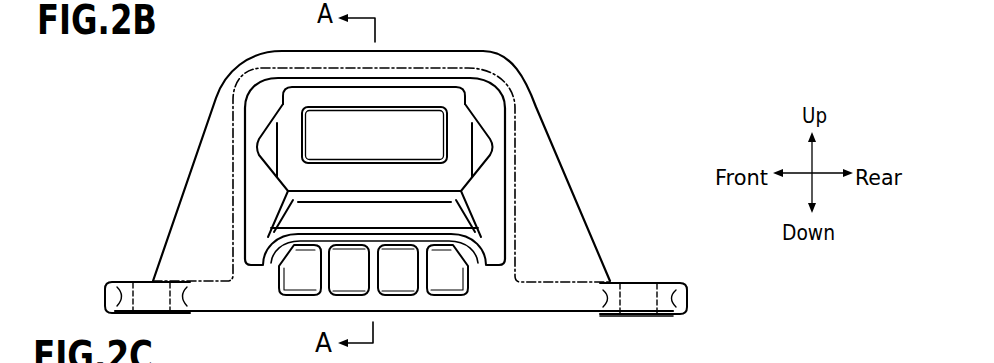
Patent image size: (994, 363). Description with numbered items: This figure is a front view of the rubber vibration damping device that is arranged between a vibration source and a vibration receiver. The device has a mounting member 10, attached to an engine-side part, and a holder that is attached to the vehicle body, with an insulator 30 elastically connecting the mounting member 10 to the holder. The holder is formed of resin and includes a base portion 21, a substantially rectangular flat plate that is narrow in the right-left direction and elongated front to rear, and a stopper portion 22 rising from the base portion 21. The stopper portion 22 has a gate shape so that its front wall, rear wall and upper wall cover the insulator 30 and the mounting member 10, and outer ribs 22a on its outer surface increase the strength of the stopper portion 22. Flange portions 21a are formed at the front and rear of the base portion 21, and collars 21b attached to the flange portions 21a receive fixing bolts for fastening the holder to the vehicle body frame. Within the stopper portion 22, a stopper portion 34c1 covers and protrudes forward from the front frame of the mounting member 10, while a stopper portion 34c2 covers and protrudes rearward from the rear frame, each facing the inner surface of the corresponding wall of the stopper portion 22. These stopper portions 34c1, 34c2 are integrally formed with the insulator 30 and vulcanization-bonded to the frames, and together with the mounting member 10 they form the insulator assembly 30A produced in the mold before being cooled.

The mounting member 10 is at (422, 100).
The base portion 21 is at (557, 298).
The flange portion 21a is at (115, 282).
The collar 21b is at (660, 317).
The stopper portion 22 is at (518, 71).
The outer rib 22a is at (554, 152).
The insulator 30 is at (474, 213).
The insulator assembly 30A is at (280, 98).
The stopper portion 34c1 is at (267, 133).
The stopper portion 34c2 is at (483, 130).